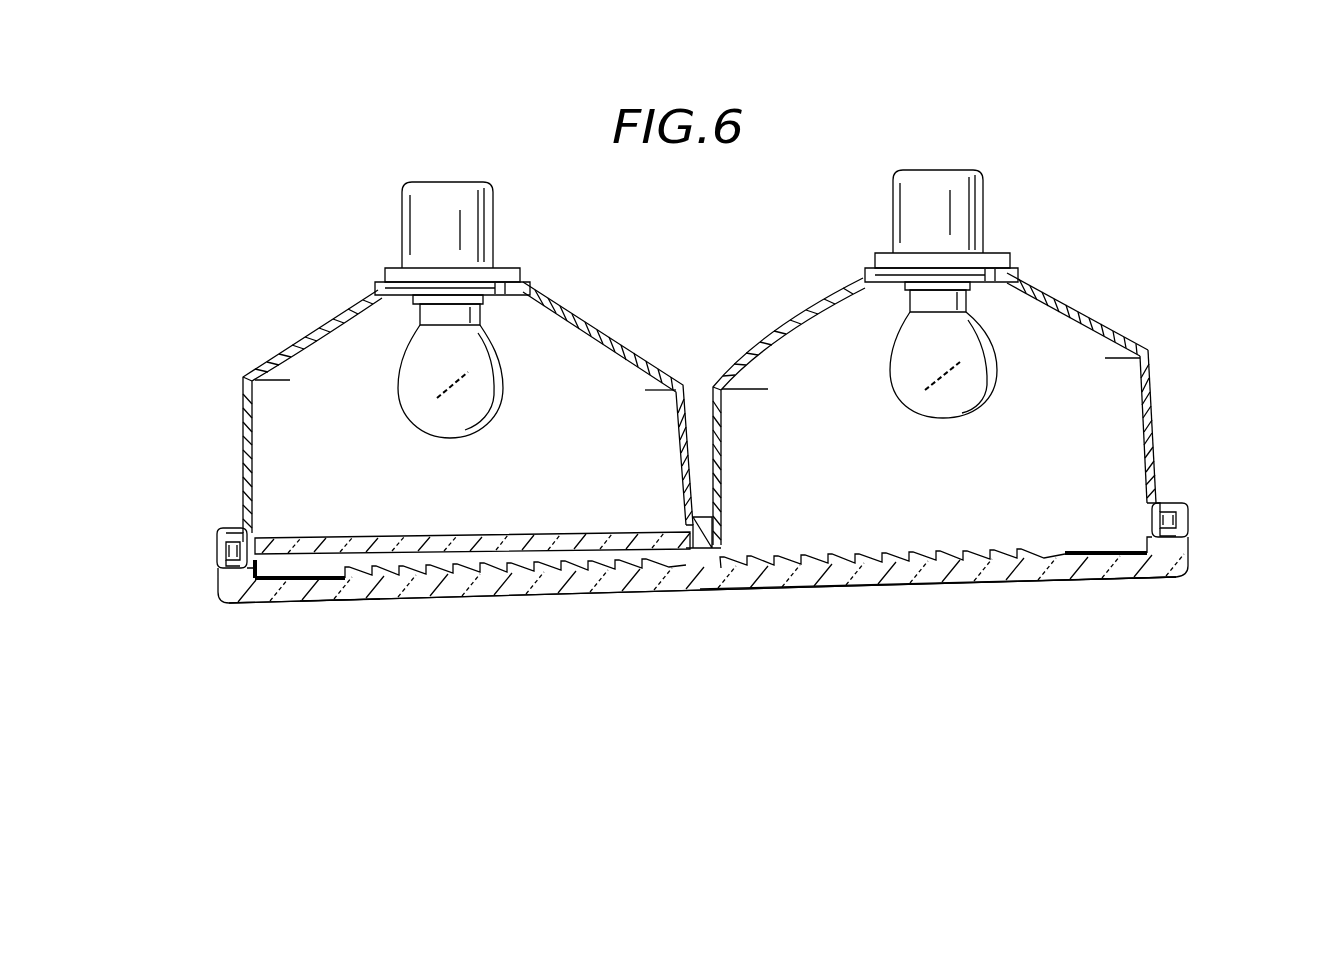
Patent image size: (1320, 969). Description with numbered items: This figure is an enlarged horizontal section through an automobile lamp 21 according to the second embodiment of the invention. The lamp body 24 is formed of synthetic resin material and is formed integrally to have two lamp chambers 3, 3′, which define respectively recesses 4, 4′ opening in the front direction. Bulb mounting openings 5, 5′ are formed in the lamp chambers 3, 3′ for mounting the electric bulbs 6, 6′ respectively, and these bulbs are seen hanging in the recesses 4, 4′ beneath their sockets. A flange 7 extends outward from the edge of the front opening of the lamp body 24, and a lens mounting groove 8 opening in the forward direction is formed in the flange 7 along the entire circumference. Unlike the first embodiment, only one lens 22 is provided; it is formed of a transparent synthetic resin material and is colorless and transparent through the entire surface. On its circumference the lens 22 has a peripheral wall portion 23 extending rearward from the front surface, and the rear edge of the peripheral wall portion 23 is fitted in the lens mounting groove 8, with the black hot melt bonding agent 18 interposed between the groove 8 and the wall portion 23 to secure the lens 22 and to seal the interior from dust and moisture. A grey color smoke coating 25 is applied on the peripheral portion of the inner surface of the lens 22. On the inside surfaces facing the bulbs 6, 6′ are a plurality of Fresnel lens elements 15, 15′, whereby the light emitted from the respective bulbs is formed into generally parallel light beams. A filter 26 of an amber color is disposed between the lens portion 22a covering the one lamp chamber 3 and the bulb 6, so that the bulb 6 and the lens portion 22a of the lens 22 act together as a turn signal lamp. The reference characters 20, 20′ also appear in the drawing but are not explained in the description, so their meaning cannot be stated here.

The lamp chamber 3 is at (252, 442).
The lamp chamber 3′ is at (1140, 427).
The recess 4 is at (602, 350).
The recess 4′ is at (824, 331).
The bulb mounting opening 5 is at (398, 272).
The bulb mounting opening 5′ is at (885, 266).
The electric bulb 6 is at (497, 397).
The electric bulb 6′ is at (890, 393).
The flange 7 is at (220, 534).
The lens mounting groove 8 is at (225, 563).
The Fresnel lens elements 15 is at (395, 566).
The Fresnel lens elements 15′ is at (905, 556).
The hot melt bonding agent 18 is at (233, 534).
The base plate 20 is at (436, 612).
The base plate (second unit) 20′ is at (970, 590).
The automobile lamp 21 is at (1114, 205).
The lens 22 is at (855, 589).
The lens portion 22a is at (340, 604).
The peripheral wall portion 23 is at (216, 553).
The lamp body 24 is at (1124, 330).
The smoke coating 25 is at (294, 576).
The filter 26 is at (600, 536).